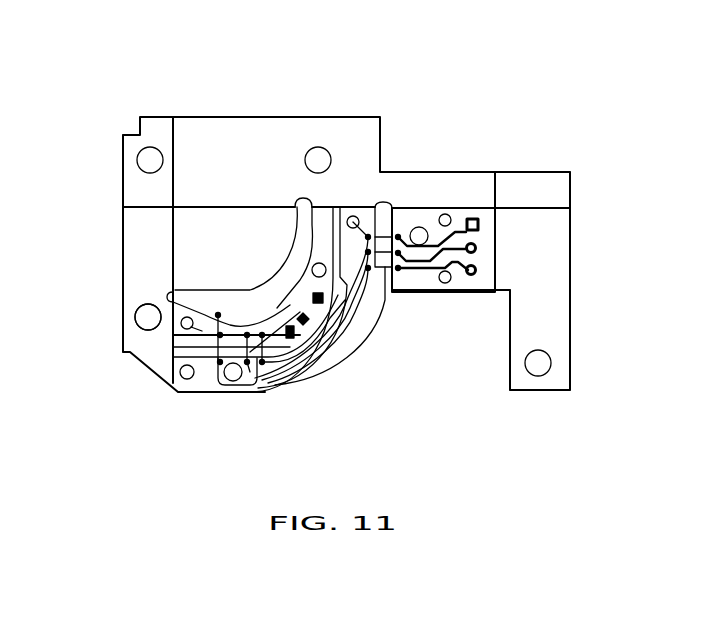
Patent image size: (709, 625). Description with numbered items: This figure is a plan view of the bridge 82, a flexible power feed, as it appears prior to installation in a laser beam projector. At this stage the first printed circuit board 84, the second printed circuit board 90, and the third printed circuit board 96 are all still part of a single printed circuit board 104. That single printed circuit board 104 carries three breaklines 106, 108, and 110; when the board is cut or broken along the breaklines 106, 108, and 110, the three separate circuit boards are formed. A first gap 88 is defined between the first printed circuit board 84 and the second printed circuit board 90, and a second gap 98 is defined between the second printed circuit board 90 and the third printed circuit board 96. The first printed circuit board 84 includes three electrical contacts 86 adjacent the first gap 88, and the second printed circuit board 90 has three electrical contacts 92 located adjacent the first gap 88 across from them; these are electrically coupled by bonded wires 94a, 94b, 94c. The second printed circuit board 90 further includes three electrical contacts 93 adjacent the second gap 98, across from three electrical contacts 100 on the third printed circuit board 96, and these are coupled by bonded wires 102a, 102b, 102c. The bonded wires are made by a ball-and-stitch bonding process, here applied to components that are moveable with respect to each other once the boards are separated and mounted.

The bridge 82 is at (458, 443).
The first printed circuit board 84 is at (480, 282).
The electrical contacts 86 is at (403, 223).
The first gap 88 is at (383, 205).
The second printed circuit board 90 is at (203, 380).
The electrical contacts 92 is at (352, 218).
The electrical contacts 93 is at (249, 376).
The bonded wire 94a is at (373, 203).
The bonded wire 94b is at (398, 268).
The bonded wire 94c is at (385, 268).
The third printed circuit board 96 is at (182, 321).
The second gap 98 is at (318, 353).
The electrical contacts 100 is at (218, 313).
The bonded wire 102a is at (213, 353).
The bonded wire 102b is at (243, 368).
The bonded wire 102c is at (285, 370).
The printed circuit board 104 is at (408, 171).
The breakline 106 is at (532, 203).
The breakline 108 is at (170, 236).
The breakline 110 is at (498, 250).